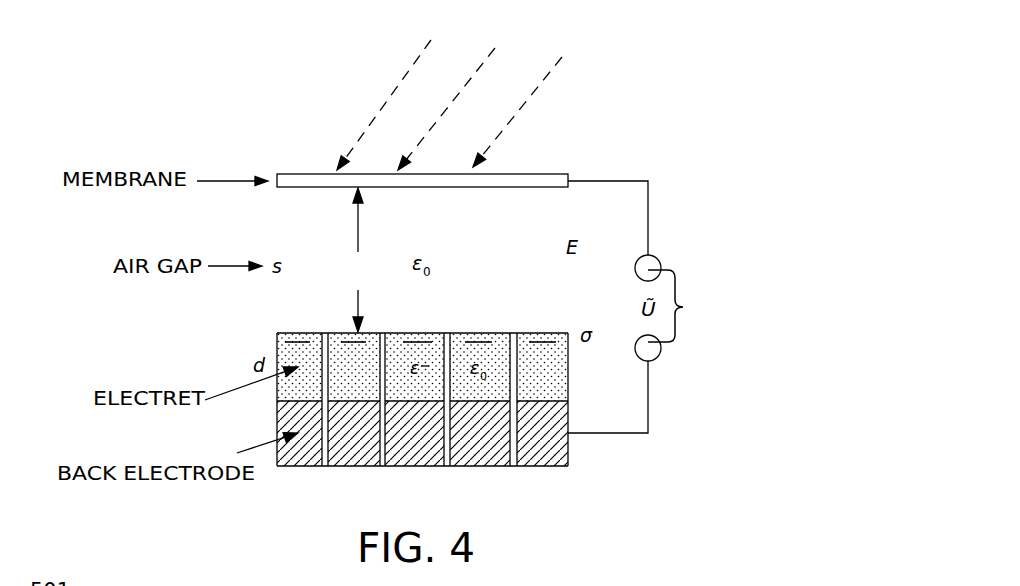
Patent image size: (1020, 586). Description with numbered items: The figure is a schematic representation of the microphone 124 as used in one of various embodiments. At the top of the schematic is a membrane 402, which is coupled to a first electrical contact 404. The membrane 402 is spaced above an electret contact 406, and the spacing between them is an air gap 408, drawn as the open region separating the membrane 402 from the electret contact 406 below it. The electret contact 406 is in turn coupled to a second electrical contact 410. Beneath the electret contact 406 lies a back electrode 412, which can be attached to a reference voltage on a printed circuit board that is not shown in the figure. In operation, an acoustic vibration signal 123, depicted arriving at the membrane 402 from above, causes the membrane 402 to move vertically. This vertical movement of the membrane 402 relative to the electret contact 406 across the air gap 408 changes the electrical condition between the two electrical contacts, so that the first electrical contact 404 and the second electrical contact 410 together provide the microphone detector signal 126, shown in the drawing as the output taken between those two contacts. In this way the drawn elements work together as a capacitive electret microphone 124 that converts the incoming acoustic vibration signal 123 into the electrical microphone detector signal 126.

The microphone 124 is at (188, 54).
The acoustic vibration signal 123 is at (513, 115).
The membrane 402 is at (303, 176).
The first electrical contact 404 is at (660, 268).
The electret contact 406 is at (285, 333).
The air gap 408 is at (354, 260).
The second electrical contact 410 is at (660, 348).
The back electrode 412 is at (522, 413).
The microphone detector signal 126 is at (683, 307).